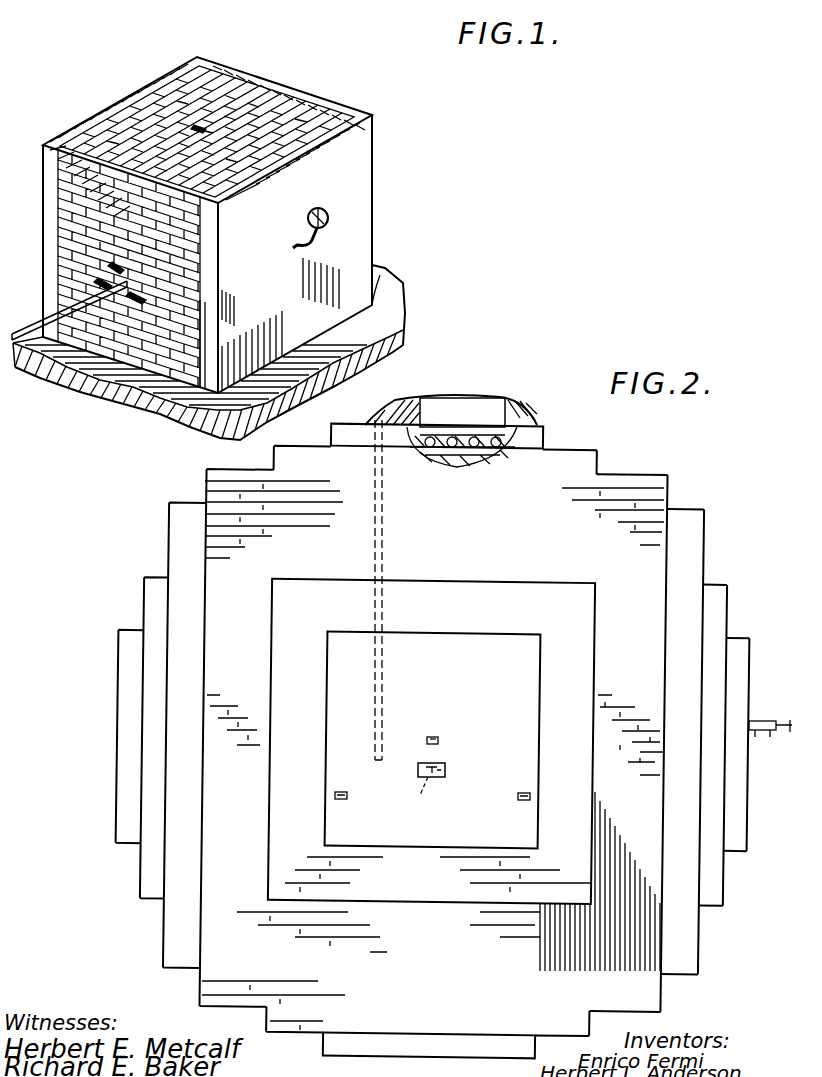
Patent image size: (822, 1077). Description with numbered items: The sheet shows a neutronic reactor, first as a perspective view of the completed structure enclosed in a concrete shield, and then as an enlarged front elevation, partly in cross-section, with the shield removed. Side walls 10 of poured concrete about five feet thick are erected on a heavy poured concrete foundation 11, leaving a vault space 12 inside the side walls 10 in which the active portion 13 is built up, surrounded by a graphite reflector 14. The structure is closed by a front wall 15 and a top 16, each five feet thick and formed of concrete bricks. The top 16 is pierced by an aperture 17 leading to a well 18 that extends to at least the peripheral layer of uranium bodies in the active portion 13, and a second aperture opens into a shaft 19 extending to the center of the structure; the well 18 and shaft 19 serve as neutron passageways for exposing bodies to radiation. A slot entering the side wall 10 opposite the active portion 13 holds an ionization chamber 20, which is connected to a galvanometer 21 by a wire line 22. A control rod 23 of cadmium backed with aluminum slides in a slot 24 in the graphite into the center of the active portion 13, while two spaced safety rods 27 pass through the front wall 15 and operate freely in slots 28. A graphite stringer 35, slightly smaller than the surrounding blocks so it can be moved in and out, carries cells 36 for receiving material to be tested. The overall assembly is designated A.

In FIG. 1, the side walls 10 is at (244, 218).
In FIG. 1, the foundation 11 is at (396, 294).
In FIG. 1, the vault space 12 is at (262, 95).
In FIG. 2, the active portion 13 is at (679, 489).
In FIG. 2, the graphite reflector 14 is at (526, 414).
In FIG. 1, the front wall 15 is at (200, 334).
In FIG. 1, the top 16 is at (134, 116).
In FIG. 1, the aperture 17 is at (198, 126).
In FIG. 2, the well 18 is at (503, 400).
In FIG. 2, the shaft 19 is at (381, 424).
In FIG. 2, the ionization chamber 20 is at (766, 720).
In FIG. 1, the galvanometer 21 is at (306, 219).
In FIG. 1, the wire line 22 is at (297, 247).
In FIG. 2, the wire line 22 is at (770, 732).
In FIG. 1, the control rod 23 is at (114, 264).
In FIG. 2, the control rod 23 is at (440, 740).
In FIG. 2, the slot 24 is at (432, 736).
In FIG. 1, the safety rods 27 is at (100, 282).
In FIG. 2, the safety rods 27 is at (340, 799).
In FIG. 2, the slots 28 is at (347, 794).
In FIG. 1, the stringer 35 is at (18, 333).
In FIG. 2, the stringer 35 is at (446, 767).
In FIG. 2, the cells 36 is at (430, 794).
In FIG. 1, the pile assembly A is at (393, 224).